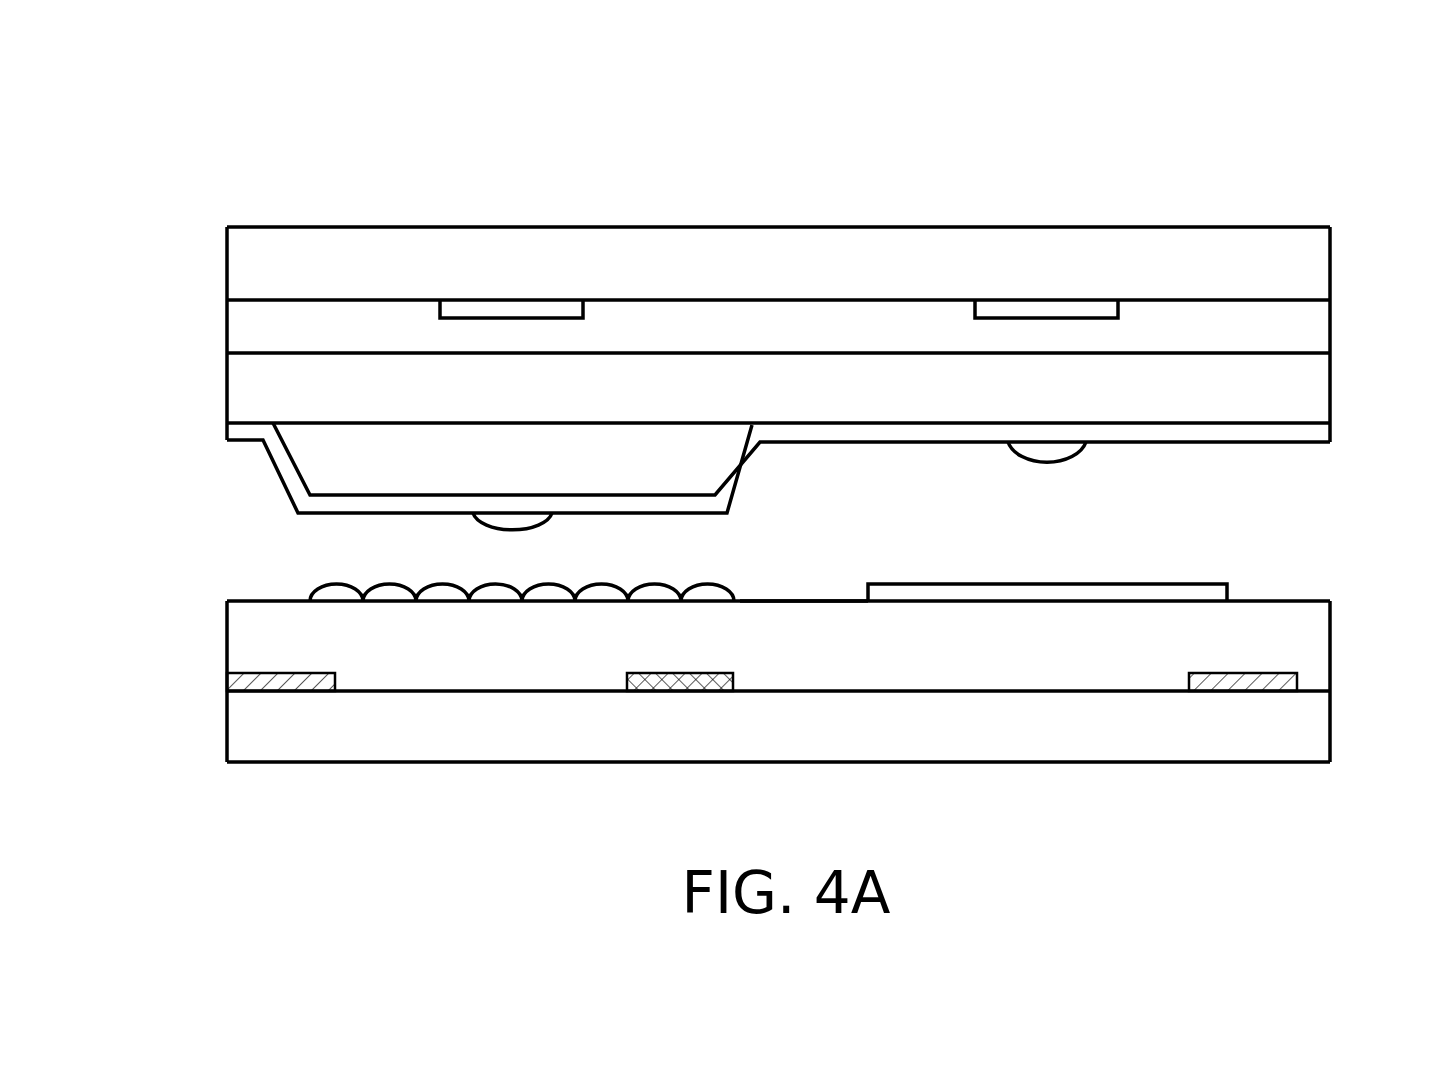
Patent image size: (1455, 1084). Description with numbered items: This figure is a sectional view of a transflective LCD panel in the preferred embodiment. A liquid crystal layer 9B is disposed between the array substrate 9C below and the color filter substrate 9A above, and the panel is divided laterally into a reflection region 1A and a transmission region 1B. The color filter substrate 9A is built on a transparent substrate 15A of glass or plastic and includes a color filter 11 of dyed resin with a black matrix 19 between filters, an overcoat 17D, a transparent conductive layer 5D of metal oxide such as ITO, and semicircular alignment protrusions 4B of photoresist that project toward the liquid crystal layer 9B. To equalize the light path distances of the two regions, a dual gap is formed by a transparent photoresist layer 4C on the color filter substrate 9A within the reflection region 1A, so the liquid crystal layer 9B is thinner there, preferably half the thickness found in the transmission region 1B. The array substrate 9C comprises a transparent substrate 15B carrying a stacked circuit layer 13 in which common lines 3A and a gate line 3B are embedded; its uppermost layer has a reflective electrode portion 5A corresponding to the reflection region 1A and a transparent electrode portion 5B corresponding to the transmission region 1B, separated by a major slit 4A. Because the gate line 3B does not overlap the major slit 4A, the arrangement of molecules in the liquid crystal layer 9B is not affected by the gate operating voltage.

The reflection region 1A is at (263, 132).
The transmission region 1B is at (797, 132).
The black matrix 19 is at (512, 310).
The transparent substrate 15A is at (242, 262).
The color filter 11 is at (242, 325).
The overcoat 17D is at (242, 388).
The conductive layer 5D is at (242, 432).
The transparent photoresist layer 4C is at (328, 475).
The alignment protrusions 4B is at (1049, 455).
The color filter substrate 9A is at (1357, 227).
The liquid crystal layer 9B is at (1357, 440).
The array substrate 9C is at (1357, 601).
The stacked circuit layer 13 is at (242, 636).
The transparent substrate 15B is at (242, 725).
The common lines 3A is at (280, 675).
The gate line 3B is at (676, 692).
The reflective electrode portion 5A is at (598, 603).
The major slit 4A is at (797, 593).
The transparent electrode portion 5B is at (1047, 595).